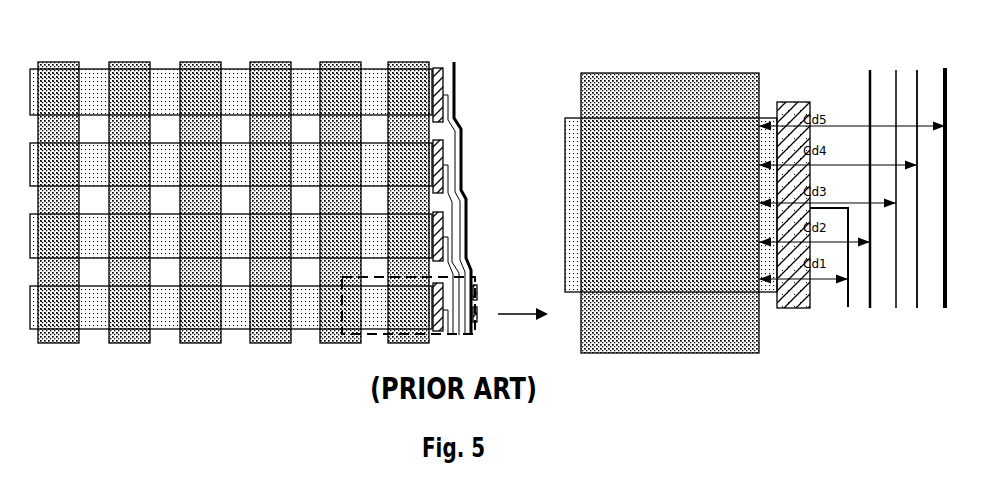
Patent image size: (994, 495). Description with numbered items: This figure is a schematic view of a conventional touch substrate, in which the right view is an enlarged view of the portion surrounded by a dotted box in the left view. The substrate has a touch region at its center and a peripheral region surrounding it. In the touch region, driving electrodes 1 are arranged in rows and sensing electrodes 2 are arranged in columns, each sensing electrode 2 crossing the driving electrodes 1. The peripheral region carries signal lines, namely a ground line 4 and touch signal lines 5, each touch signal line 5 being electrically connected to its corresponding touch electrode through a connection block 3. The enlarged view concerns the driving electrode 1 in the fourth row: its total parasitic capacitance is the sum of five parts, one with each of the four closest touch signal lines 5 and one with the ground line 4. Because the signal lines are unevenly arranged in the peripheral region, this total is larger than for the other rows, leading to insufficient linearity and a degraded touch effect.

The driving electrode 1 is at (197, 78).
The sensing electrode 2 is at (272, 62).
The connection block 3 is at (439, 83).
The ground line 4 is at (457, 100).
The touch signal line 5 is at (448, 187).